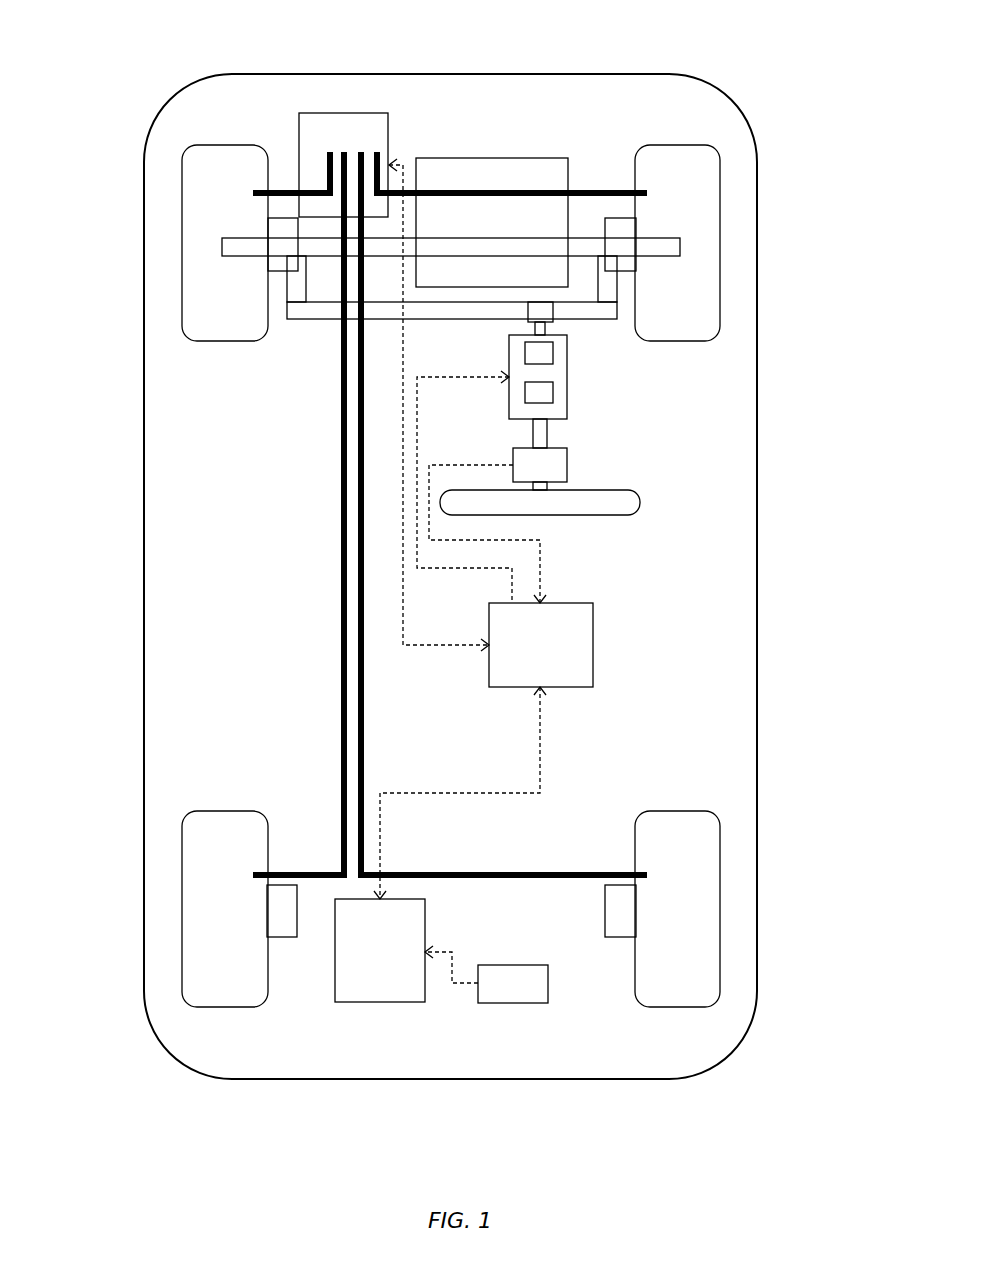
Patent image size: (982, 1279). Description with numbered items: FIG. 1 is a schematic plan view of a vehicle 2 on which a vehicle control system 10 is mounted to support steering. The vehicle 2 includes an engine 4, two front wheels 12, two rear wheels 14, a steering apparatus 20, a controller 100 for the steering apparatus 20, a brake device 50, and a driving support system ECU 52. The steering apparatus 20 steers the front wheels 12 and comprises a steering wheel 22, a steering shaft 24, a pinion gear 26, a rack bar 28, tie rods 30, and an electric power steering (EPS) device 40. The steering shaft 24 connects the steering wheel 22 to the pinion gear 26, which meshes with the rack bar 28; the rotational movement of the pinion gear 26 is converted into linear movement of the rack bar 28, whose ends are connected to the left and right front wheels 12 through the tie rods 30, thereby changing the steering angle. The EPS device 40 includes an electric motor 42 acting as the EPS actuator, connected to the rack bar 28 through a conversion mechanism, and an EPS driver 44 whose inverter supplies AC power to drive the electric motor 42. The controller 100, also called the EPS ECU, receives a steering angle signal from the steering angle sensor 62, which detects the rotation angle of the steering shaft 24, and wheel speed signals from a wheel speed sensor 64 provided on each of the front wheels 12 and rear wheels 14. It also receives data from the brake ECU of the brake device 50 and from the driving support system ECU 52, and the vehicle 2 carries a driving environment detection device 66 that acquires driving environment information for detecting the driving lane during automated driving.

The vehicle 2 is at (578, 74).
The engine 4 is at (483, 158).
The vehicle control system 10 is at (473, 539).
The front wheels 12 is at (182, 171).
The rear wheels 14 is at (182, 882).
The steering apparatus 20 is at (572, 441).
The steering wheel 22 is at (640, 500).
The steering shaft 24 is at (547, 433).
The pinion gear 26 is at (553, 312).
The rack bar 28 is at (322, 320).
The tie rods 30 is at (283, 290).
The electric power steering (EPS) device 40 is at (556, 377).
The electric motor 42 is at (525, 352).
The EPS driver 44 is at (525, 394).
The brake device 50 is at (350, 113).
The driving support system electronic control unit (ECU) 52 is at (383, 1002).
The steering angle sensor 62 is at (567, 463).
The wheel speed sensor 64 is at (277, 225).
The driving environment detection device 66 is at (513, 1003).
The controller 100 is at (593, 640).